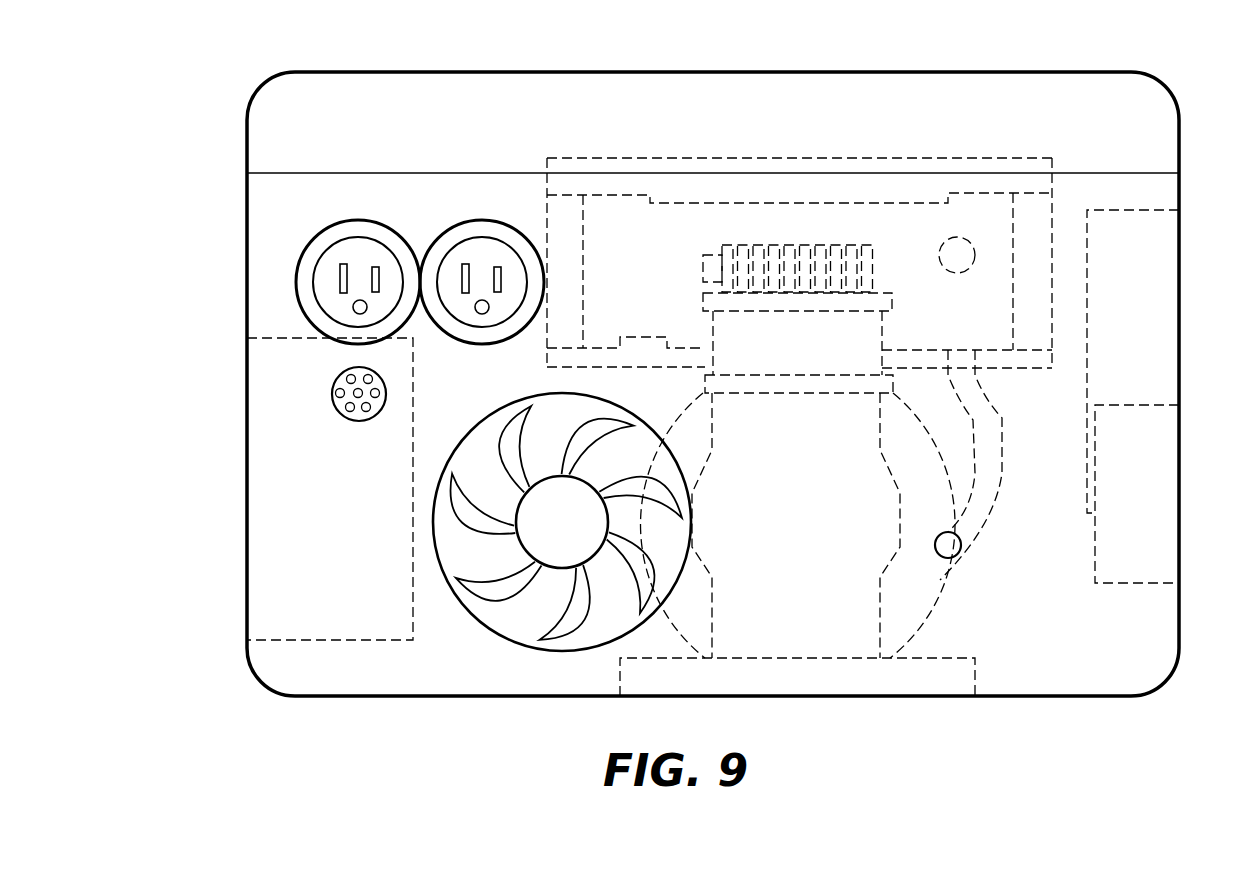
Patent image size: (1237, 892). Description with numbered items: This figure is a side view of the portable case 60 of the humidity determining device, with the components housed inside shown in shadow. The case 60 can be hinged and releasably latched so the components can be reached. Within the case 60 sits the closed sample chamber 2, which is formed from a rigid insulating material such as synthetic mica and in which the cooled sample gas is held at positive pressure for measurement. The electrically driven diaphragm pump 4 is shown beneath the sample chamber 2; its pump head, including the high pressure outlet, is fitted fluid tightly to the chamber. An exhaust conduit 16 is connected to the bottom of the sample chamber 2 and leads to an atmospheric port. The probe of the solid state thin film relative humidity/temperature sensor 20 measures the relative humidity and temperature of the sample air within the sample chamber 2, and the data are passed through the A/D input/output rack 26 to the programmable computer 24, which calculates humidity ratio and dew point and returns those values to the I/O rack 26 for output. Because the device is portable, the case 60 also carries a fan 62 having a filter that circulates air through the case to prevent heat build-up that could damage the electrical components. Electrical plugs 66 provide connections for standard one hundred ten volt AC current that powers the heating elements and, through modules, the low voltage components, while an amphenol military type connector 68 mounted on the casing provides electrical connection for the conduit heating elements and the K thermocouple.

The case 60 is at (874, 72).
The sample chamber 2 is at (580, 158).
The electrical plugs 66 is at (397, 240).
The amphenol military type connector 68 is at (338, 413).
The A/D input/output rack 26 is at (265, 582).
The fan 62 is at (500, 592).
The electrically driven diaphragm pump 4 is at (803, 552).
The exhaust conduit 16 is at (993, 500).
The programmable computer 24 is at (1163, 354).
The relative humidity/temperature sensor 20 is at (1168, 543).